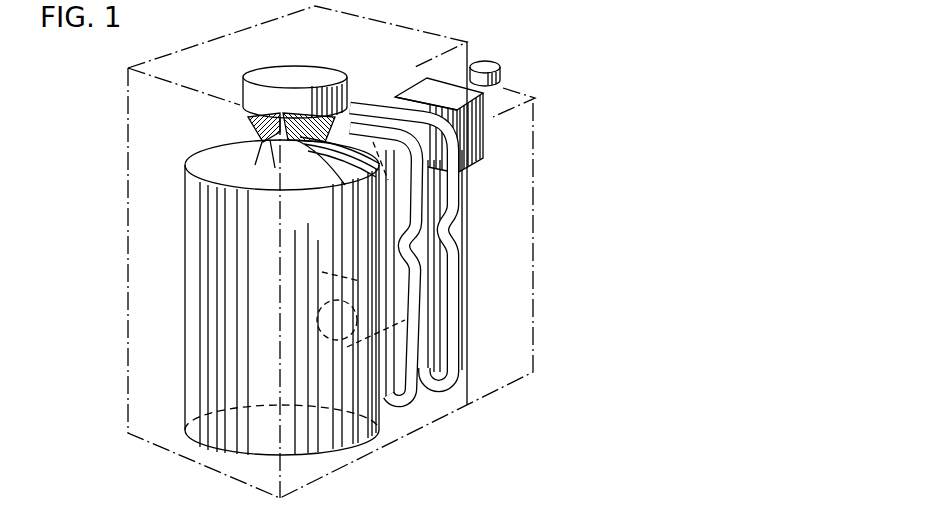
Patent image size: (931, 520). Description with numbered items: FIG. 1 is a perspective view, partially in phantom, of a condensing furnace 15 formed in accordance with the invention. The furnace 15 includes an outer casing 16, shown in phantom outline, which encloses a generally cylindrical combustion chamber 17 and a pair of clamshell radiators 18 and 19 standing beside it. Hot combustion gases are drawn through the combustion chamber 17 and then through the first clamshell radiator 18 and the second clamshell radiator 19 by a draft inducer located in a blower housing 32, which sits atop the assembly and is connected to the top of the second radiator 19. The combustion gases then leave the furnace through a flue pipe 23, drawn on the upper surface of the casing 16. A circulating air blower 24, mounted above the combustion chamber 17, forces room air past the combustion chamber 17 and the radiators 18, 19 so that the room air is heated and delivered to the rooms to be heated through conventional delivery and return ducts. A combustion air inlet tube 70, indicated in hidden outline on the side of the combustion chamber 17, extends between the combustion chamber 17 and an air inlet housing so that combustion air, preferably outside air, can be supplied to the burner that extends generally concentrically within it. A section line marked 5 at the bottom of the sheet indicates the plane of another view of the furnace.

The furnace 15 is at (96, 248).
The outer casing 16 is at (125, 392).
The combustion chamber 17 is at (192, 300).
The first clamshell radiator 18 is at (404, 404).
The second clamshell radiator 19 is at (453, 327).
The flue pipe 23 is at (495, 60).
The circulating air blower 24 is at (246, 117).
The blower housing 32 is at (405, 95).
The combustion air inlet tube 70 is at (340, 299).
The section line for FIG. 5 is at (458, 516).